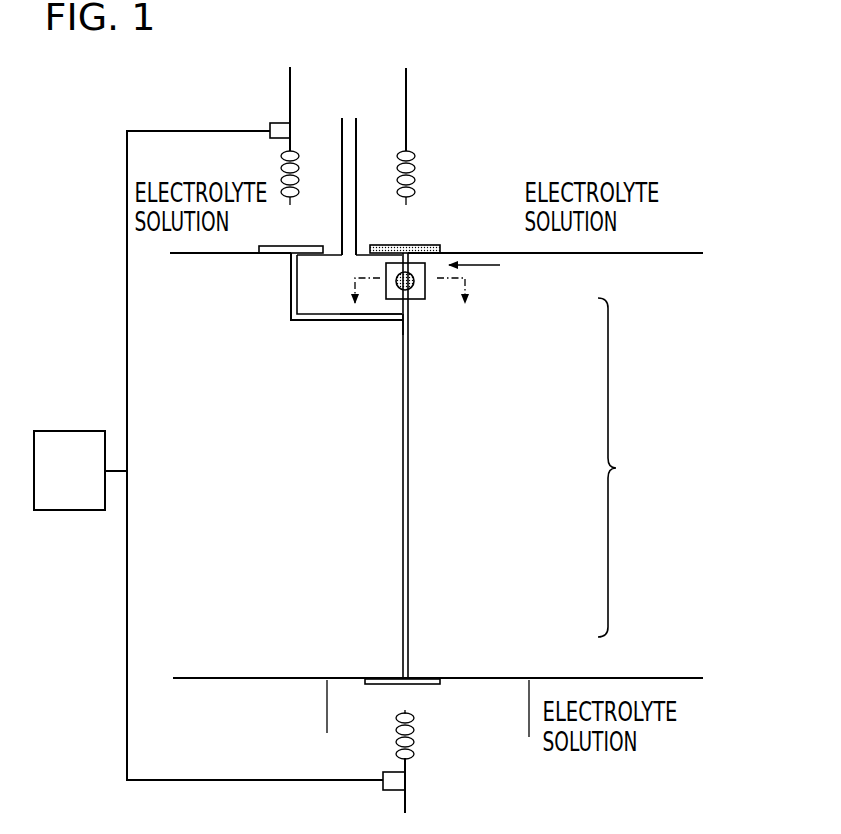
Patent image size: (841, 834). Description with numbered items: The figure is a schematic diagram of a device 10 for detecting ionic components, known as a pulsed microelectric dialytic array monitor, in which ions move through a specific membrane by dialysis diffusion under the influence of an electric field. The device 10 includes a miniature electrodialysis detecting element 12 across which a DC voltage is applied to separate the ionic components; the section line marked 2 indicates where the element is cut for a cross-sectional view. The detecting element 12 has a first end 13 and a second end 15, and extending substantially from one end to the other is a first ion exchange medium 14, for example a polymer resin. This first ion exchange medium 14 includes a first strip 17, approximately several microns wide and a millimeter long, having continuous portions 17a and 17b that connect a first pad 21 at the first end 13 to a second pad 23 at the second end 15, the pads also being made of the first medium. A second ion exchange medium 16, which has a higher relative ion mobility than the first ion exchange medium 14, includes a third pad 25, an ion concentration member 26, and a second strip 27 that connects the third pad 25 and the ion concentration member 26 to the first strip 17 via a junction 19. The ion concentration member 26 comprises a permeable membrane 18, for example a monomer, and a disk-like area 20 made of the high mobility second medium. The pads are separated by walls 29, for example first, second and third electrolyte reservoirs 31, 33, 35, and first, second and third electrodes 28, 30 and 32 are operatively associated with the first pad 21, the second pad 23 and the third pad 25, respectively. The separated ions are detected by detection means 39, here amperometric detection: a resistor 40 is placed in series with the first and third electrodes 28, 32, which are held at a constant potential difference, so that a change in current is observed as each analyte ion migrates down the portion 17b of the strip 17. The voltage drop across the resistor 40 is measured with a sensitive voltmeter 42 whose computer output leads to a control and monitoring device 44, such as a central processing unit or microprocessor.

The device 10 is at (157, 172).
The miniature electrodialysis detecting element 12 is at (624, 467).
The first end 13 is at (357, 230).
The first ion exchange medium 14 is at (258, 308).
The second end 15 is at (242, 680).
The second ion exchange medium 16 is at (488, 274).
The first strip 17 is at (402, 468).
The continuous portion of first strip 17a is at (303, 323).
The continuous portion of first strip 17b is at (410, 497).
The permeable membrane 18 is at (387, 267).
The junction 19 is at (402, 330).
The disk-like area 20 is at (413, 282).
The first pad 21 is at (285, 243).
The second pad 23 is at (440, 683).
The third pad 25 is at (420, 245).
The ion concentration member 26 is at (425, 292).
The second strip 27 is at (402, 307).
The first electrode 28 is at (289, 73).
The walls 29 is at (342, 197).
The second electrode 30 is at (407, 800).
The first electrolyte reservoir 31 is at (322, 130).
The third electrode 32 is at (407, 112).
The second electrolyte reservoir 33 is at (505, 720).
The third electrolyte reservoir 35 is at (383, 128).
The detection means 39 is at (115, 678).
The resistor 40 is at (275, 123).
The voltmeter 42 is at (383, 772).
The control and monitoring device 44 is at (75, 430).
The section line 2- 2 is at (409, 294).